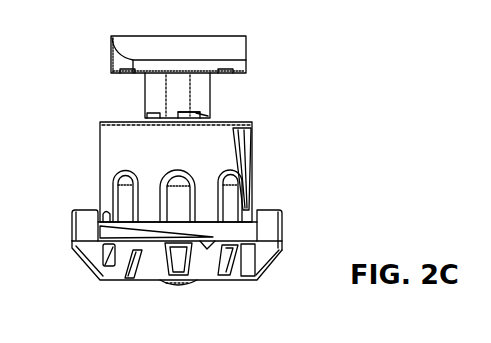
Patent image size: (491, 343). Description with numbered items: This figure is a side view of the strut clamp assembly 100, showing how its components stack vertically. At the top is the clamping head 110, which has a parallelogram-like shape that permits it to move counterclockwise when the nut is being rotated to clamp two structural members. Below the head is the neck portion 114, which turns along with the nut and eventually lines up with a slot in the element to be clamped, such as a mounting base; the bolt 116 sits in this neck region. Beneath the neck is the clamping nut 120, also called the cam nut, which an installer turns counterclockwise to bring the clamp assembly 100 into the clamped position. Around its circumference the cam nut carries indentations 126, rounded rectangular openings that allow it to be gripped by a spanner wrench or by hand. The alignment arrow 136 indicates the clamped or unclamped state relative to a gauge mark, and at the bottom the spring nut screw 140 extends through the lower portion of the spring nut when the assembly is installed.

The clamp assembly 100 is at (108, 25).
The clamping head 110 is at (217, 47).
The neck portion 114 is at (157, 93).
The bolt 116 is at (203, 113).
The clamping nut 120 is at (203, 141).
The indentations 126 is at (182, 197).
The alignment arrow 136 is at (84, 223).
The spring nut screw 140 is at (182, 294).